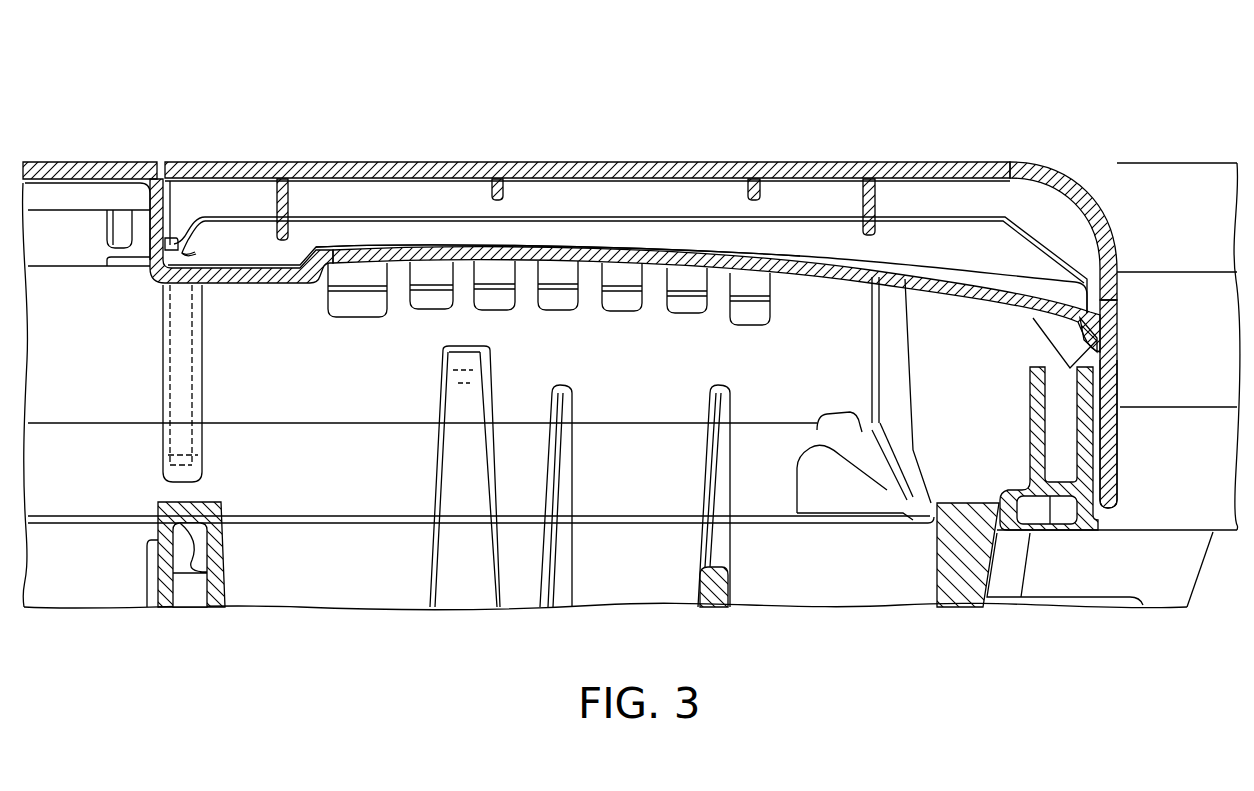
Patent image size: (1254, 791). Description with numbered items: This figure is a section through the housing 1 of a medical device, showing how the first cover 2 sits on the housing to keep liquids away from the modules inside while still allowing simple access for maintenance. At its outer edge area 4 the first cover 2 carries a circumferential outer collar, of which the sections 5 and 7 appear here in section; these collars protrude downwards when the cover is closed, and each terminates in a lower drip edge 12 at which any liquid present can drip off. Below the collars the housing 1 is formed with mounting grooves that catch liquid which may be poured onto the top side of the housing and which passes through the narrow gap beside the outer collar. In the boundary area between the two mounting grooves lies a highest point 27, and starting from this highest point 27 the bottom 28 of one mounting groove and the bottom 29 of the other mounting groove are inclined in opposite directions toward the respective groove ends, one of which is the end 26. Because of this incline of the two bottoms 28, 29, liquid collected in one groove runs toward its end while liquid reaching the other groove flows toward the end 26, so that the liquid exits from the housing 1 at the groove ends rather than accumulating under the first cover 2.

The housing 1 is at (630, 414).
The first cover 2 is at (822, 163).
The outer edge area 4 is at (201, 168).
The outer collar section 5 is at (1108, 312).
The outer collar section 7 is at (178, 241).
The lower drip edge 12 is at (183, 253).
The end of mounting groove 26 is at (1112, 362).
The highest point 27 is at (313, 243).
The bottom of mounting groove 28 is at (240, 285).
The bottom of mounting groove 29 is at (947, 293).